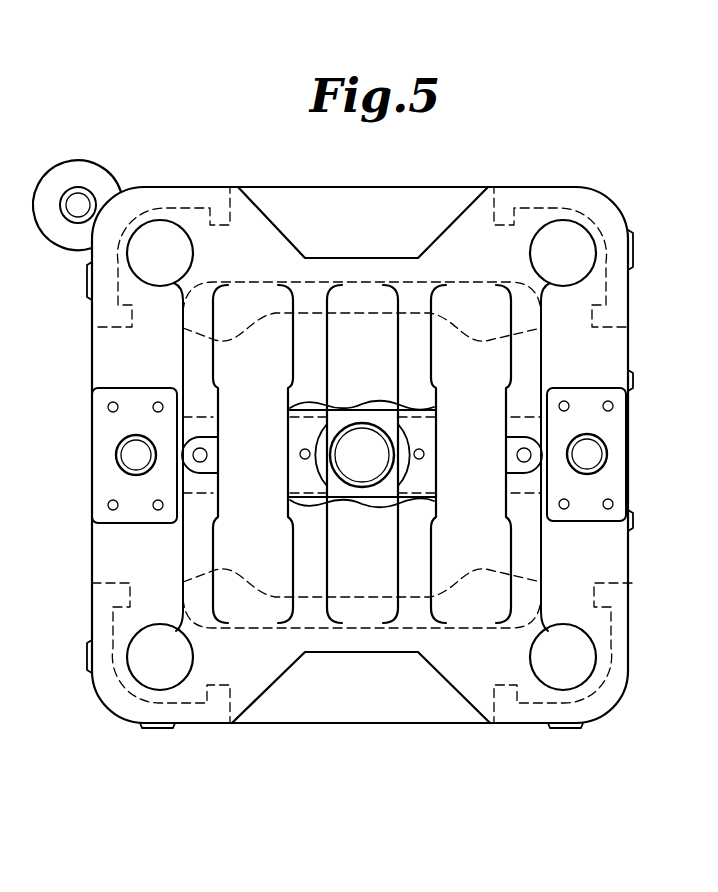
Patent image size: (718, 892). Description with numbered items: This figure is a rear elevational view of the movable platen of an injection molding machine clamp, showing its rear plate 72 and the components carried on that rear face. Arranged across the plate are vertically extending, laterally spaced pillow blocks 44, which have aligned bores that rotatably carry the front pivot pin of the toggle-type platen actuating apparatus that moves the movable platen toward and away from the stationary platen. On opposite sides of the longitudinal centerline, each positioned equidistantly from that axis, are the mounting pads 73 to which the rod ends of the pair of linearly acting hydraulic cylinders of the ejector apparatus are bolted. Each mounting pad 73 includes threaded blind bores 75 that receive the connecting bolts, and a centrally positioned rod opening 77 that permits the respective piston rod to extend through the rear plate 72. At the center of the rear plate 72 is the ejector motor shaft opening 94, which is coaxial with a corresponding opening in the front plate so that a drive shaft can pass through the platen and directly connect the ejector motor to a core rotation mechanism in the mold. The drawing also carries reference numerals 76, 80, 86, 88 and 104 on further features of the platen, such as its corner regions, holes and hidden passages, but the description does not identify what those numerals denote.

The pillow blocks 44 is at (305, 323).
The rear plate 72 is at (613, 340).
The mounting pad 73 is at (105, 466).
The threaded blind bores 75 is at (108, 404).
The corner portions 76 is at (170, 190).
The rod opening 77 is at (125, 450).
The mounting holes 80 is at (178, 233).
The hidden passages 86 is at (290, 425).
The central block 88 is at (415, 485).
The ejector motor shaft opening 94 is at (350, 430).
The trapezoidal portions 104 is at (363, 285).